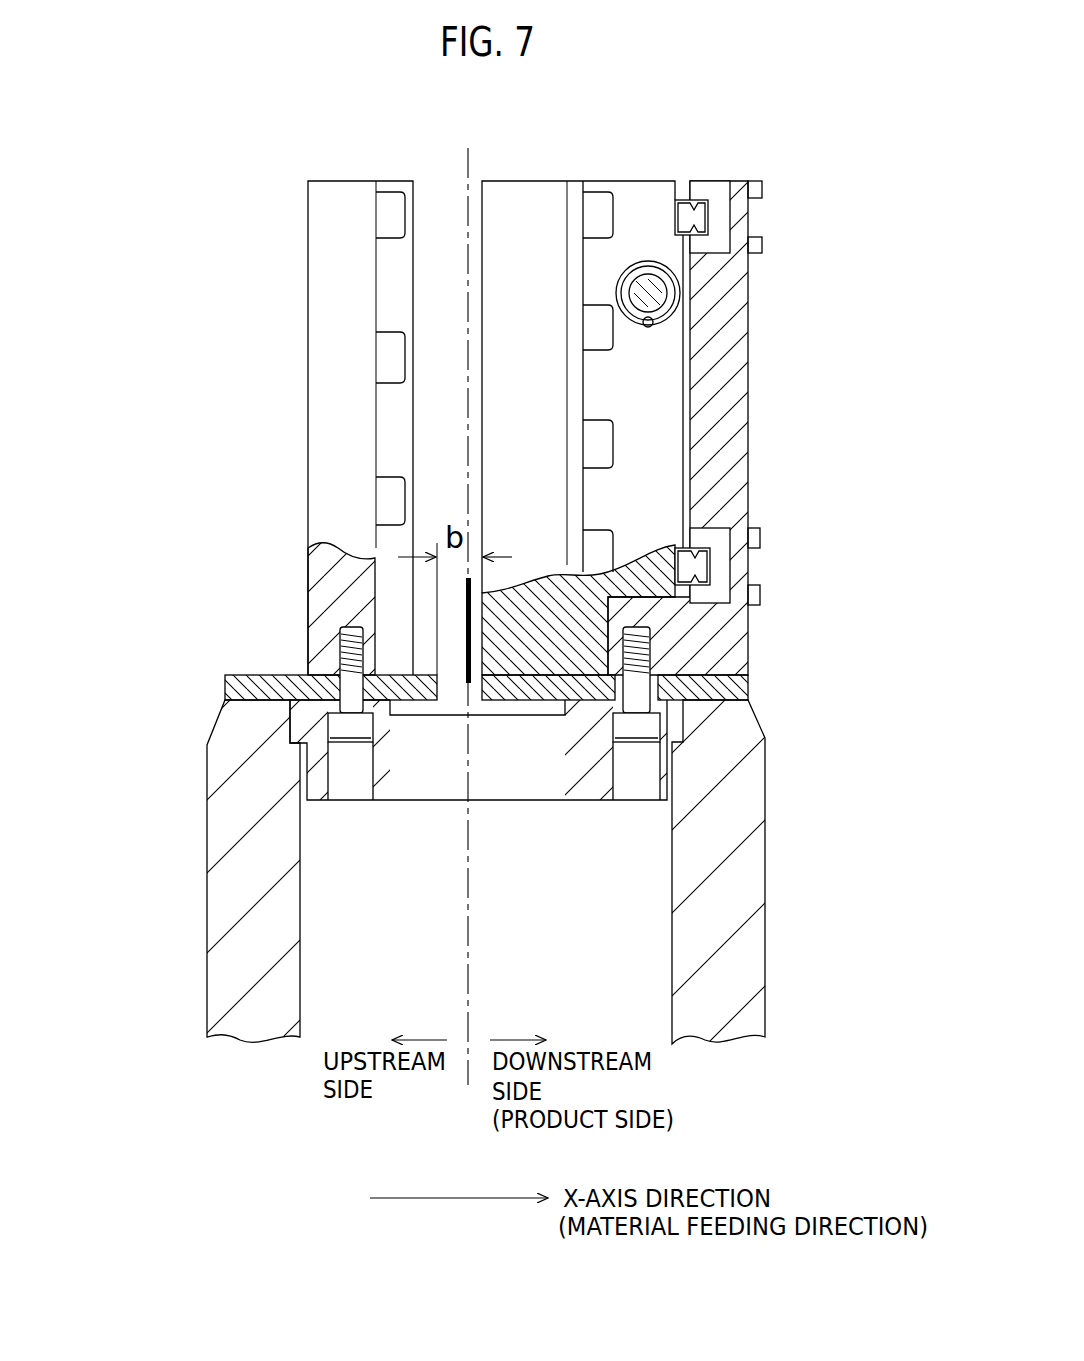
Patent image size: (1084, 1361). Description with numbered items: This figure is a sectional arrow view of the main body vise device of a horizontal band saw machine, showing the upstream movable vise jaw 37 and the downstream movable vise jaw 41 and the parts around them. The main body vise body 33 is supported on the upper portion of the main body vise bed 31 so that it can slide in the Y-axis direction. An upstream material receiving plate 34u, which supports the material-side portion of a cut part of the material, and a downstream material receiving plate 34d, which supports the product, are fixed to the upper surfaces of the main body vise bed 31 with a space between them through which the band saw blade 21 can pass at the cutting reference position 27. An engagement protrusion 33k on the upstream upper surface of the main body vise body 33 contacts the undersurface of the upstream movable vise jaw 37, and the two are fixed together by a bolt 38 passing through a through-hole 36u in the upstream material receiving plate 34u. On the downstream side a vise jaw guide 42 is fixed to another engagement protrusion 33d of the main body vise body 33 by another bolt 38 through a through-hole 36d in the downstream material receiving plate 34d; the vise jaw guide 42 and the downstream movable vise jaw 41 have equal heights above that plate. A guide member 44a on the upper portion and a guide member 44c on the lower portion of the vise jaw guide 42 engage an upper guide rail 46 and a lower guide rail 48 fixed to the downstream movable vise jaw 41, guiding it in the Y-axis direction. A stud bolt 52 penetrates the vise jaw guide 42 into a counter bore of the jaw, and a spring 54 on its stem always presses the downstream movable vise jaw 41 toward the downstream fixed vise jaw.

The band saw blade 21 is at (472, 640).
The cutting reference position 27 is at (470, 918).
The main body vise bed 31 is at (215, 912).
The main body vise body 33 is at (585, 790).
The engagement protrusion 33d is at (665, 712).
The engagement protrusion 33k is at (368, 695).
The upstream material receiving plate 34u is at (228, 688).
The downstream material receiving plate 34d is at (750, 688).
The through-hole 36u is at (345, 668).
The through-hole 36d is at (552, 598).
The upstream movable vise jaw 37 is at (308, 383).
The bolt 38 is at (352, 725).
The downstream movable vise jaw 41 is at (518, 192).
The vise jaw guide 42 is at (748, 325).
The guide member 44a is at (722, 220).
The guide member 44c is at (720, 572).
The upper guide rail 46 is at (700, 210).
The lower guide rail 48 is at (712, 548).
The stud bolt 52 is at (652, 274).
The spring 54 is at (630, 268).